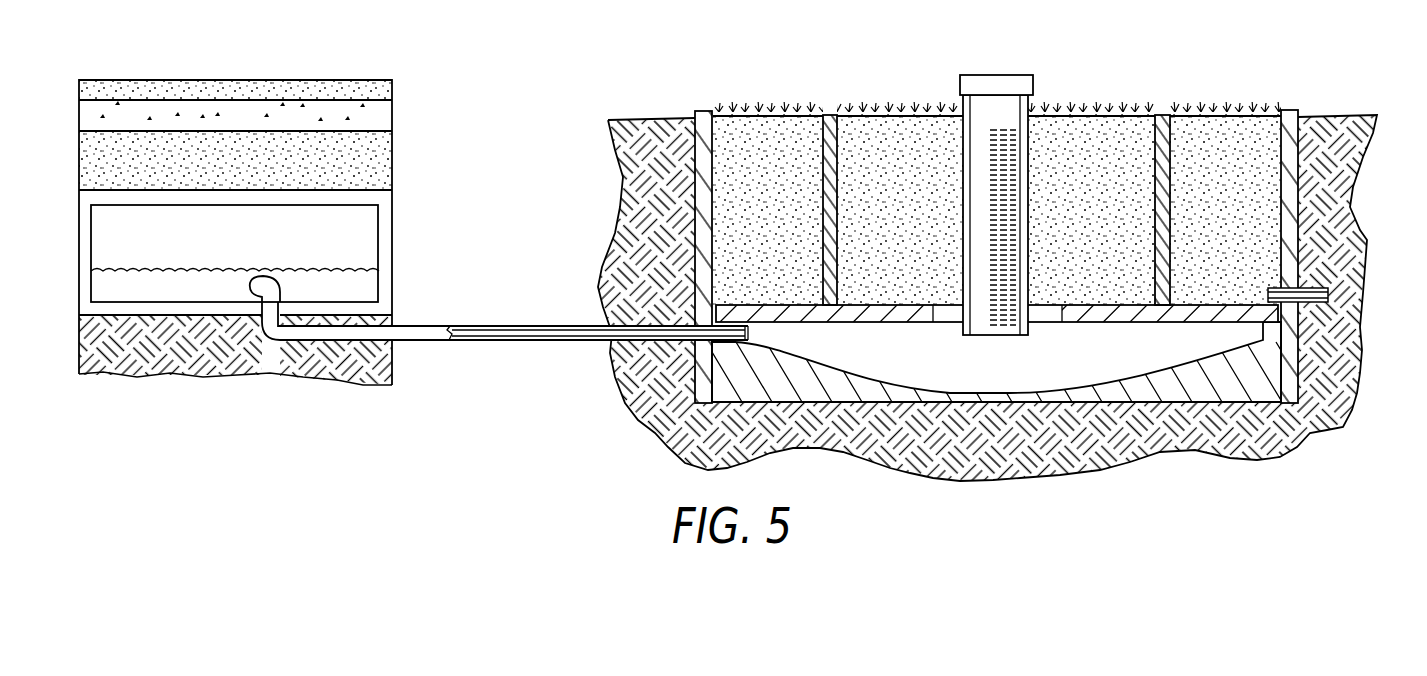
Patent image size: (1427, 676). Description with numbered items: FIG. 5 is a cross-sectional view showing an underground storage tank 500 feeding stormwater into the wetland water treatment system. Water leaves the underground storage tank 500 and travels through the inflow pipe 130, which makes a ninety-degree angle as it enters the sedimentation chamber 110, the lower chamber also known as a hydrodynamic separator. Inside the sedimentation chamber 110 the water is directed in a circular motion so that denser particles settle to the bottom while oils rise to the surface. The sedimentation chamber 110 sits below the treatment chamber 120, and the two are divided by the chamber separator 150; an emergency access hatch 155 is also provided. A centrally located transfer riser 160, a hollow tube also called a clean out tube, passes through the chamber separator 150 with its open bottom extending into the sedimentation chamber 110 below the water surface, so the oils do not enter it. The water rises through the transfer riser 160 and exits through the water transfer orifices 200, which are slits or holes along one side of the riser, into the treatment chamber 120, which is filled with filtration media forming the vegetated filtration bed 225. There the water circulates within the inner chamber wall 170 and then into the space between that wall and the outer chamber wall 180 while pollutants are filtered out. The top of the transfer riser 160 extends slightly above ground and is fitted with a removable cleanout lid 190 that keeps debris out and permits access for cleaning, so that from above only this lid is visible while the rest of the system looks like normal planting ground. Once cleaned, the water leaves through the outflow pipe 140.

The underground storage tank 500 is at (392, 225).
The inflow pipe 130 is at (473, 326).
The outflow pipe 140 is at (1333, 323).
The chamber separator 150 is at (1158, 402).
The sedimentation chamber 110 is at (883, 372).
The emergency access hatch 155 is at (1040, 318).
The treatment chamber 120 is at (1090, 122).
The vegetated filtration bed 225 is at (1135, 150).
The outer chamber wall 180 is at (703, 112).
The inner chamber wall 170 is at (828, 113).
The transfer riser 160 is at (1017, 105).
The cleanout lid 190 is at (980, 82).
The water transfer orifices 200 is at (1003, 204).